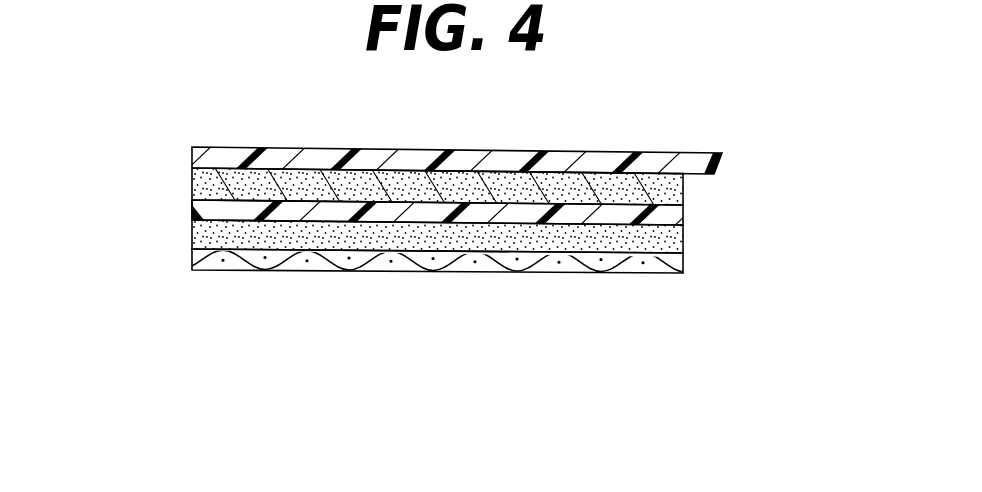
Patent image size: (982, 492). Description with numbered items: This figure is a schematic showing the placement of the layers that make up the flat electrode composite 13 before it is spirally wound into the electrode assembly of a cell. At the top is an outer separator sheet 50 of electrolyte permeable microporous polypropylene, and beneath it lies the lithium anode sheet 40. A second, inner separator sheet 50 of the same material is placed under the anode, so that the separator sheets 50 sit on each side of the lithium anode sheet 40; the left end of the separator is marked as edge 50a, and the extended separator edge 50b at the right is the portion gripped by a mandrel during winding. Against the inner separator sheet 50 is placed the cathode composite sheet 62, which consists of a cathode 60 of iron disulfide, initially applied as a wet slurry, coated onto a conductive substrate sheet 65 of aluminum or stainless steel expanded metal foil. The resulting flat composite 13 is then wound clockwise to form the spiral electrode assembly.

The flat electrode composite 13 is at (218, 108).
The separator sheet 50 is at (653, 162).
The first end of film layer 50a is at (192, 208).
The extended separator edge 50b is at (725, 163).
The lithium anode sheet 40 is at (683, 192).
The cathode composite sheet 62 is at (187, 217).
The cathode 60 is at (672, 240).
The conductive substrate sheet 65 is at (608, 268).